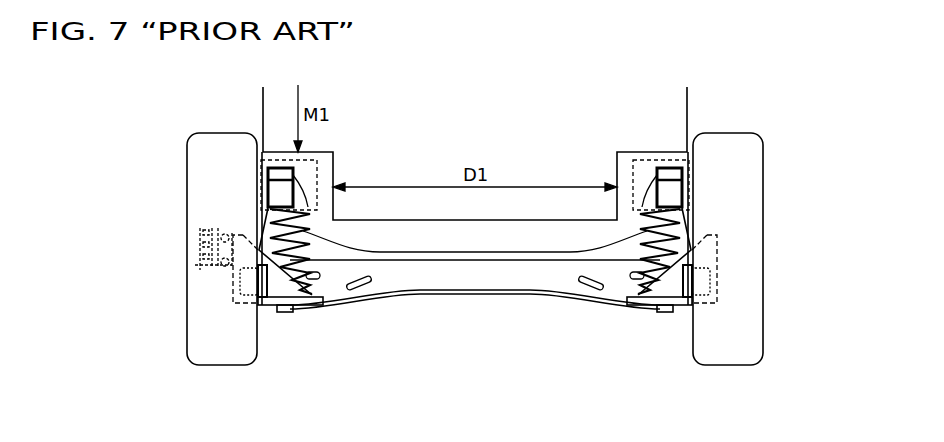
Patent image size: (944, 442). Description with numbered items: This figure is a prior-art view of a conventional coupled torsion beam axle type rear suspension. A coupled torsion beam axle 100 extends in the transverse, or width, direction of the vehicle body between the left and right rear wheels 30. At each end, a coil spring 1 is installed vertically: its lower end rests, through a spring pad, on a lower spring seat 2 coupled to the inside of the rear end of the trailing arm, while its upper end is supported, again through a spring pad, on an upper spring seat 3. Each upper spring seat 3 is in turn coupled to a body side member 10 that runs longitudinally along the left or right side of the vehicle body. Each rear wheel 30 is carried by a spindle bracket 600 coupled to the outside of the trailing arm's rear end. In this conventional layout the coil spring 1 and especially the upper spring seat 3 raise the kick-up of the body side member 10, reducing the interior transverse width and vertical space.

The body side member 10 is at (262, 160).
The upper spring seat 3 is at (281, 190).
The coil spring 1 is at (315, 247).
The lower spring seat 2 is at (282, 311).
The coupled torsion beam axle 100 is at (473, 272).
The rear wheel 30 is at (232, 250).
The spindle bracket 600 is at (250, 283).